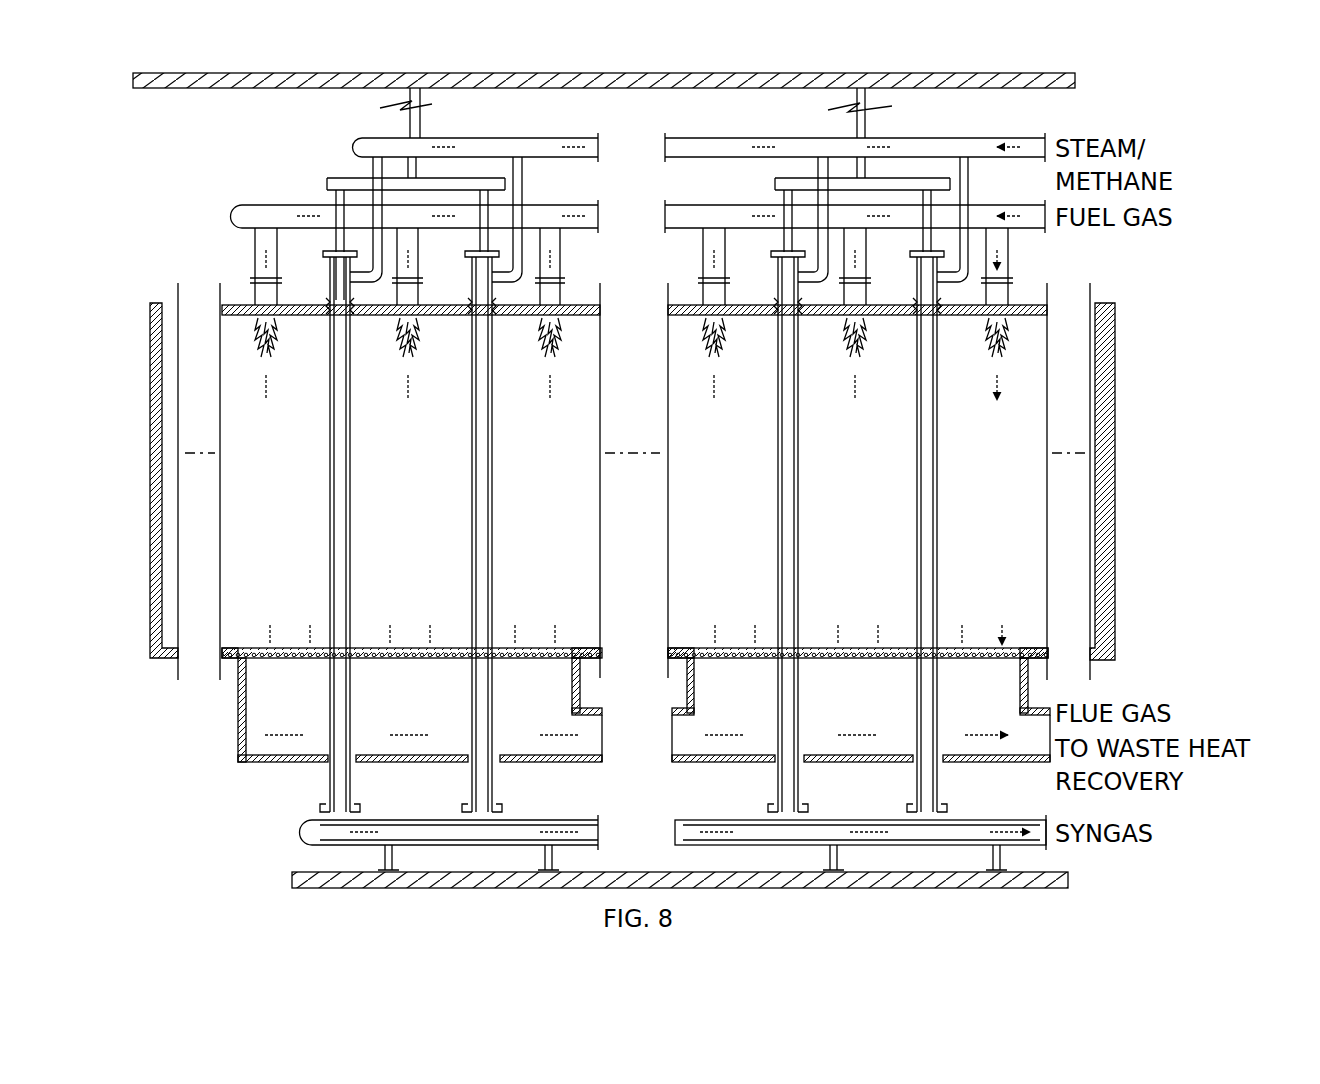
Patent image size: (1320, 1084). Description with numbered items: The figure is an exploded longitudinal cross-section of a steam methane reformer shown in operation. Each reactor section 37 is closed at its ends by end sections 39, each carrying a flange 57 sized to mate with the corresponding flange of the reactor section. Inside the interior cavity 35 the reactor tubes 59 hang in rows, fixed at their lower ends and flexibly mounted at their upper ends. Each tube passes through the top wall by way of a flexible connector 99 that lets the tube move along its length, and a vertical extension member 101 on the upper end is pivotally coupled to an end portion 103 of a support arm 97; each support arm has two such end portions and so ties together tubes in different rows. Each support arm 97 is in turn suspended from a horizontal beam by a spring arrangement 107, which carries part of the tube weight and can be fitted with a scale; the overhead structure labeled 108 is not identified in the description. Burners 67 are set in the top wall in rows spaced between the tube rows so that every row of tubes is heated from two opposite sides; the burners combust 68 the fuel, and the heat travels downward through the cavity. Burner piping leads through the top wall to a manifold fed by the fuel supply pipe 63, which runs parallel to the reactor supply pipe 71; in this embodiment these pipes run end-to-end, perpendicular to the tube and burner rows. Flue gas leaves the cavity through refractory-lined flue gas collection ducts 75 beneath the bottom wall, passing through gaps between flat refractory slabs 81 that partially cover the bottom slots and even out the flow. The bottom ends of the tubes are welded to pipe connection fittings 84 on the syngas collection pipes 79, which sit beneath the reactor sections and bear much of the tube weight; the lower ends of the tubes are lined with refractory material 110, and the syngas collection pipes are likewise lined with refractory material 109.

The interior cavity 35 is at (220, 505).
The reactor section 37 is at (220, 572).
The end section 39 is at (152, 568).
The flange 57 is at (222, 659).
The reactor tube 59 is at (470, 530).
The fuel supply pipe 63 is at (502, 140).
The burner 67 is at (270, 301).
The combustion 68 is at (270, 345).
The reactor supply pipe 71 is at (582, 228).
The flue gas collection duct 75 is at (427, 763).
The syngas collection pipe 79 is at (420, 819).
The refractory slab 81 is at (258, 646).
The pipe connection fitting 84 is at (326, 808).
The support arm 97 is at (352, 182).
The flexible connector 99 is at (330, 290).
The vertical extension member 101 is at (336, 205).
The end portion 103 is at (330, 181).
The spring arrangement 107 is at (409, 104).
The top support slab 108 is at (612, 86).
The refractory material 109 is at (676, 821).
The refractory material 110 is at (778, 722).